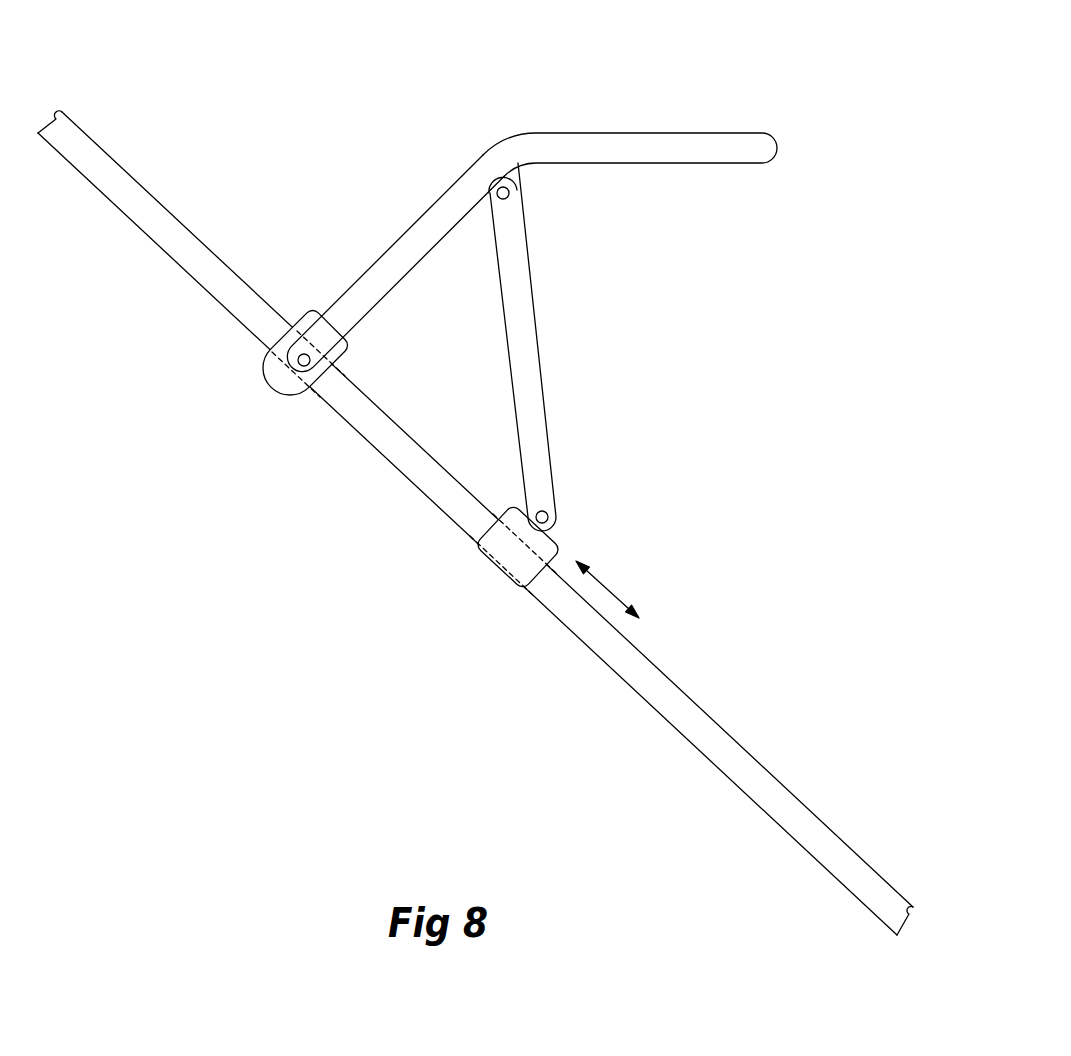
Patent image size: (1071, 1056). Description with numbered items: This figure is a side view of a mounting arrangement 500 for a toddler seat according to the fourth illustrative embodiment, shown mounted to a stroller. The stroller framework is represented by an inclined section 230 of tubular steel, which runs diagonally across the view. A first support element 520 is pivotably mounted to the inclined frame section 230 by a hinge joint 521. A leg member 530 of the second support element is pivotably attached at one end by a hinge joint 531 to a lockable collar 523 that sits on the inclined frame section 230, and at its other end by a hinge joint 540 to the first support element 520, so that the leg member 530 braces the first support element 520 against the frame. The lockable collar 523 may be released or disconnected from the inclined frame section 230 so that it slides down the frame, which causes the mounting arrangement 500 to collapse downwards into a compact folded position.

The mounting arrangement 500 is at (588, 113).
The inclined section 230 is at (767, 791).
The first support element 520 is at (411, 249).
The hinge joint 521 is at (290, 378).
The lockable collar 523 is at (516, 552).
The leg member 530 is at (528, 356).
The hinge joint 531 is at (563, 520).
The hinge joint 540 is at (478, 192).